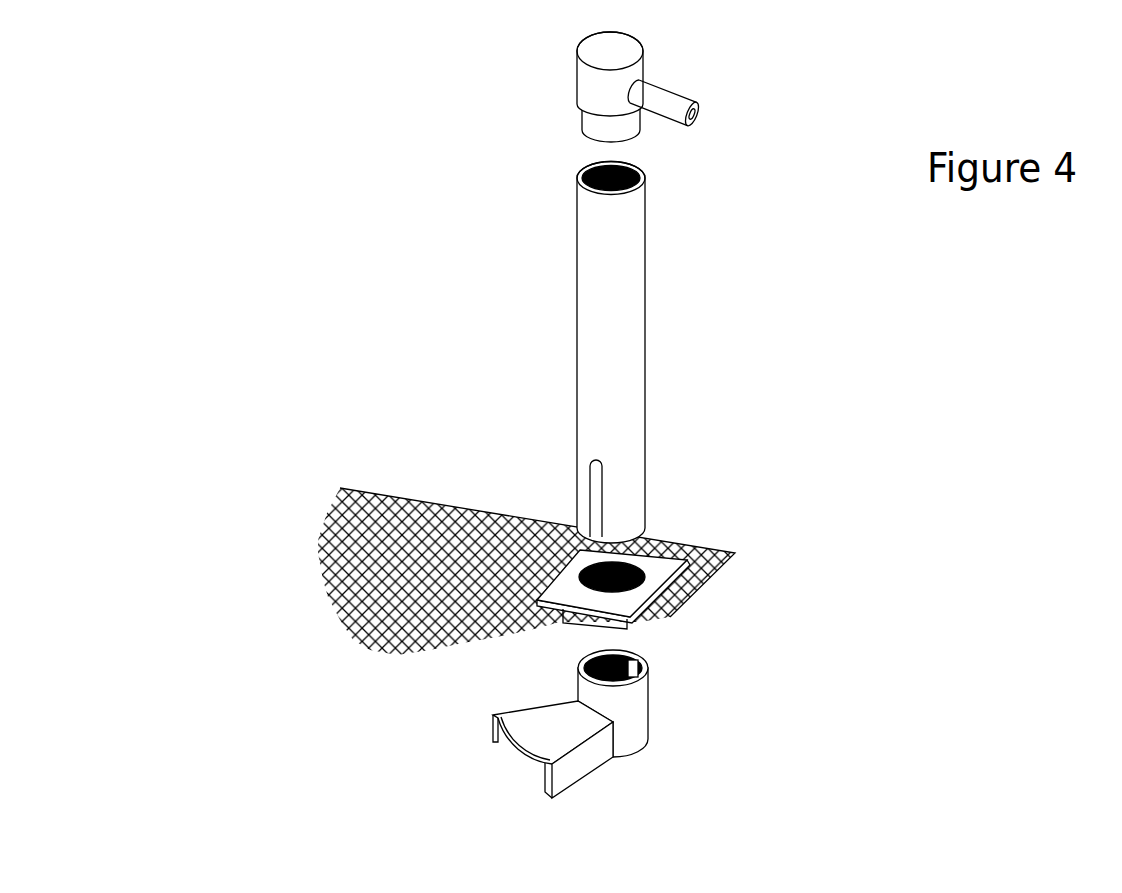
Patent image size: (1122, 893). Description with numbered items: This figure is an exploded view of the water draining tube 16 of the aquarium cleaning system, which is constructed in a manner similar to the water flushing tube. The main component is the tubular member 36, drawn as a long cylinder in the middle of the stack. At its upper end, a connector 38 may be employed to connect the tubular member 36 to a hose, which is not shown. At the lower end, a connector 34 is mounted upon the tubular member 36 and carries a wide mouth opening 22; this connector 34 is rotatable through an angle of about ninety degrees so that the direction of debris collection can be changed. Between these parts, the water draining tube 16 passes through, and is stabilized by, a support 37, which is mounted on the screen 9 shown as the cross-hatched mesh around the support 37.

The mesh screen 9 is at (367, 612).
The dispenser assembly 16 is at (565, 320).
The channel / saddle member 22 is at (537, 763).
The base cup 34 is at (648, 713).
The tube 36 is at (646, 258).
The mounting plate 37 is at (627, 621).
The cap with spout 38 is at (645, 52).